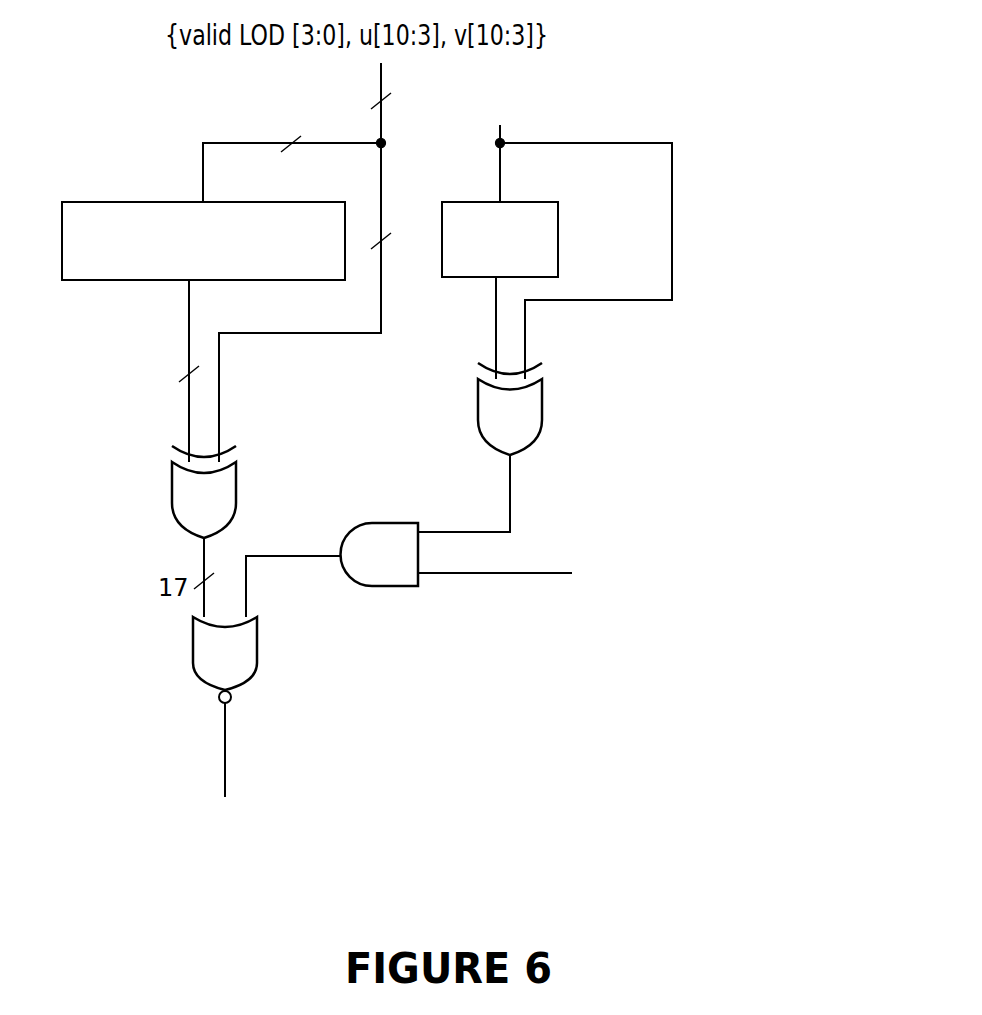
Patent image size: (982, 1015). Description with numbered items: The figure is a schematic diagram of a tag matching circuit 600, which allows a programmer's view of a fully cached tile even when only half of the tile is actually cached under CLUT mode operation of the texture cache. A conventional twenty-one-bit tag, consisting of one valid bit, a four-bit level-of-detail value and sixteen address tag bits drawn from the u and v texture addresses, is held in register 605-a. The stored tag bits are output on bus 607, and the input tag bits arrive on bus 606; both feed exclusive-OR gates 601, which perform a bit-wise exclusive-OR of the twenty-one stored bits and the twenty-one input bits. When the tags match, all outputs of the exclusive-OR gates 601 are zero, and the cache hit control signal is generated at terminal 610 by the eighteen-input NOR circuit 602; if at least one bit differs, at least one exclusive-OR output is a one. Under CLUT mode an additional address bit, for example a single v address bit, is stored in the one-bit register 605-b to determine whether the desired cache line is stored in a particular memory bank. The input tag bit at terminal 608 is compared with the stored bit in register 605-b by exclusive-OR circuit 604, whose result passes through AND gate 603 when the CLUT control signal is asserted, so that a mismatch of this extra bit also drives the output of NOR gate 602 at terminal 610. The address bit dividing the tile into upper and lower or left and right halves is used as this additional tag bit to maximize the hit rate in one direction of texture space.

The tag matching circuit 600 is at (741, 371).
The exclusive-OR gates 601 is at (237, 478).
The NOR circuit 602 is at (258, 636).
The AND gate 603 is at (388, 587).
The exclusive-OR circuit 604 is at (543, 400).
The register 605-a is at (98, 281).
The 1-bit register 605-b is at (558, 232).
The bus 606 is at (383, 162).
The bus 607 is at (190, 290).
The terminal 608 is at (673, 183).
The terminal 610 is at (227, 727).